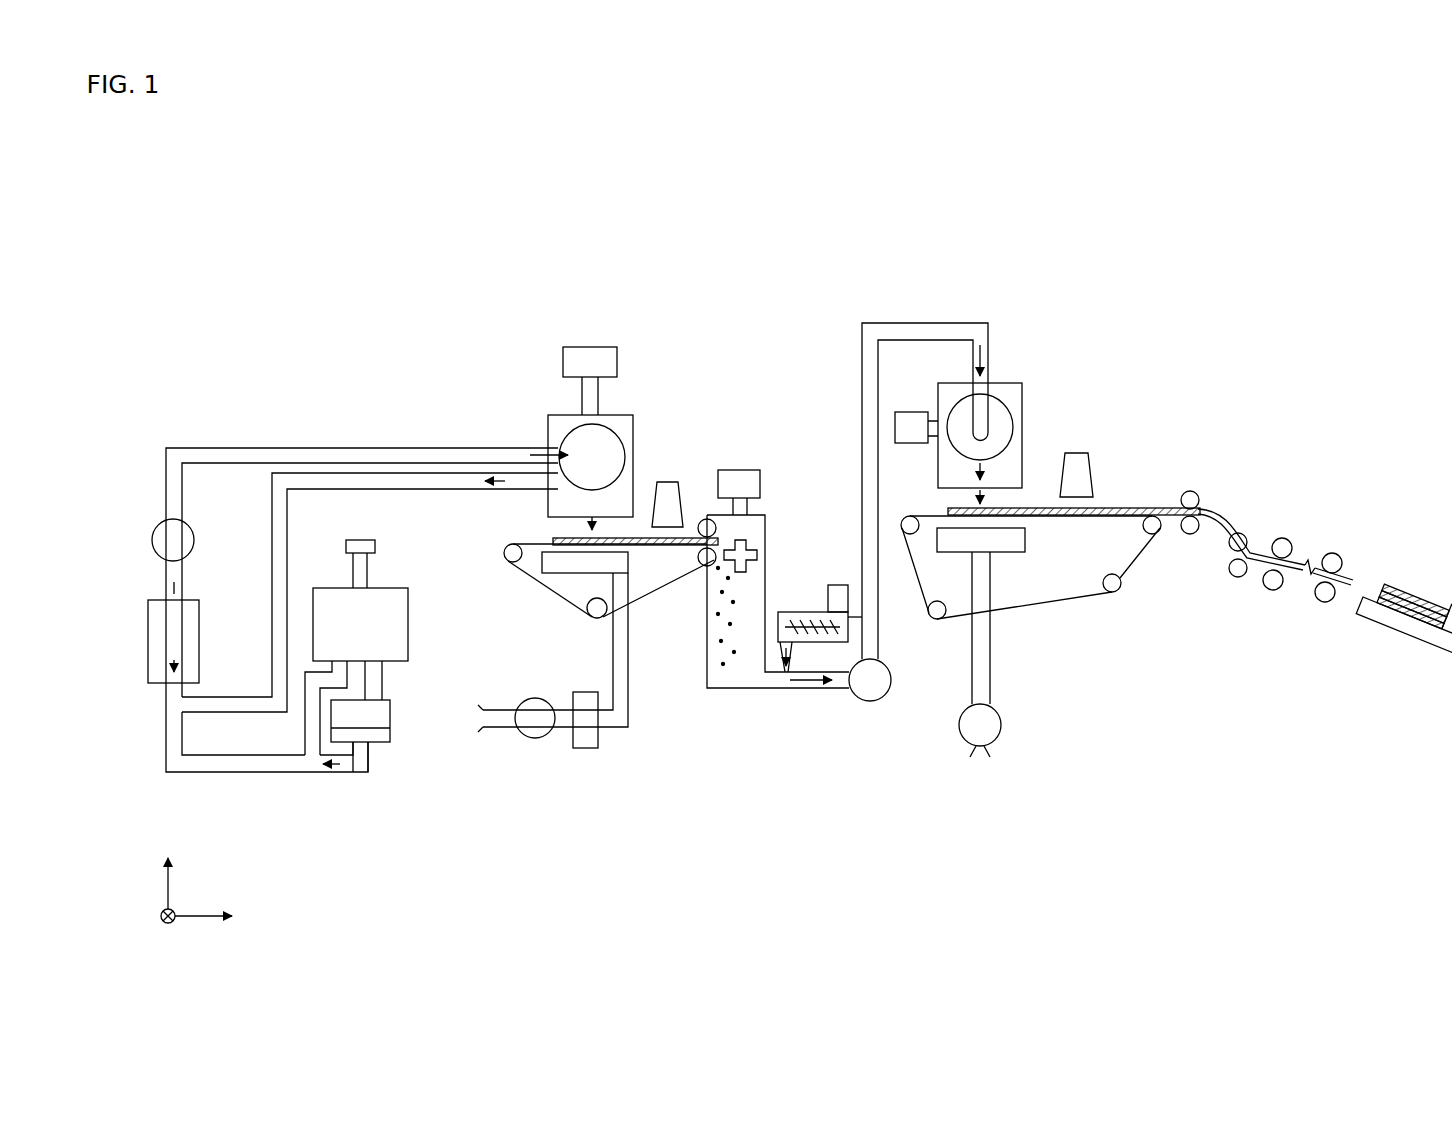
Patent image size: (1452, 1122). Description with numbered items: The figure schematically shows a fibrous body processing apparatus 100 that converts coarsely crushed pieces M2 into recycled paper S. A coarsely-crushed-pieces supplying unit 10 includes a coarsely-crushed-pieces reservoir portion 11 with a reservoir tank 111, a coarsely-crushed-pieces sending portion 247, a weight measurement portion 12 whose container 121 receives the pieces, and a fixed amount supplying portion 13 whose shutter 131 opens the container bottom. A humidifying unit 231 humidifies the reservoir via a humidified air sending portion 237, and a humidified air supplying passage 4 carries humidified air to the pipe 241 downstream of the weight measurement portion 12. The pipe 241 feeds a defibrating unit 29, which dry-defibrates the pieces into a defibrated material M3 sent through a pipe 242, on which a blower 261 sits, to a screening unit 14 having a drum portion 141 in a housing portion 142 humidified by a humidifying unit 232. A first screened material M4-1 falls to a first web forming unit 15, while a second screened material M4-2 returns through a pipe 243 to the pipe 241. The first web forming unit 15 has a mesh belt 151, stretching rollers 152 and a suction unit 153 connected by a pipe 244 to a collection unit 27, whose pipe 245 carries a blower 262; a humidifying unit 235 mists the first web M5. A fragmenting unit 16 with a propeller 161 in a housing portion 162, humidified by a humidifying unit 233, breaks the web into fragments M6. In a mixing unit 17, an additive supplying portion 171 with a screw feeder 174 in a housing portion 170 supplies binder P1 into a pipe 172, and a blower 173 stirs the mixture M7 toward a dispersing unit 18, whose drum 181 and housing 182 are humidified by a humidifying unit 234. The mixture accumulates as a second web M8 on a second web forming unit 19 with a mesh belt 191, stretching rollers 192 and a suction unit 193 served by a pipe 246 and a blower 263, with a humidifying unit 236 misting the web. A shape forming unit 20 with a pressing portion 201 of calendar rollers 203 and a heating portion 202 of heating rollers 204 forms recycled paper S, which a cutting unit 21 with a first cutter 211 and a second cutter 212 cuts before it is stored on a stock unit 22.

The fibrous body processing apparatus 100 is at (778, 168).
The humidified air supplying passage 4 is at (312, 721).
The coarsely-crushed-pieces supplying unit 10 is at (396, 575).
The coarsely-crushed-pieces reservoir portion 11 is at (420, 624).
The reservoir tank 111 is at (405, 628).
The weight measurement portion 12 is at (398, 736).
The container 121 is at (378, 718).
The fixed amount supplying portion 13 is at (300, 808).
The shutter 131 is at (340, 735).
The screening unit 14 is at (658, 416).
The drum portion 141 is at (620, 426).
The housing portion 142 is at (635, 418).
The first web forming unit 15 is at (642, 602).
The mesh belt 151 is at (657, 594).
The stretching rollers 152 is at (505, 552).
The suction unit 153 is at (630, 561).
The fragmenting unit 16 is at (768, 521).
The propeller 161 is at (760, 553).
The housing portion 162 is at (716, 690).
The mixing unit 17 is at (841, 705).
The housing portion 170 is at (875, 618).
The additive supplying portion 171 is at (835, 585).
The pipe 172 is at (891, 680).
The blower 173 is at (880, 700).
The screw feeder 174 is at (790, 612).
The dispersing unit 18 is at (1043, 384).
The drum 181 is at (1006, 409).
The housing 182 is at (1016, 383).
The second web forming unit 19 is at (1071, 606).
The mesh belt 191 is at (1026, 606).
The stretching rollers 192 is at (910, 516).
The suction unit 193 is at (1025, 541).
The shape forming unit 20 is at (1234, 480).
The pressing portion 201 is at (1228, 452).
The heating portion 202 is at (1255, 683).
The calendar rollers 203 is at (1182, 494).
The heating rollers 204 is at (1230, 548).
The cutting unit 21 is at (1277, 472).
The first cutter 211 is at (1276, 570).
The second cutter 212 is at (1328, 582).
The stock unit 22 is at (1420, 634).
The collection unit 27 is at (590, 749).
The defibrating unit 29 is at (147, 646).
The humidifying unit 231 is at (364, 540).
The humidifying unit 232 is at (592, 347).
The humidifying unit 233 is at (740, 470).
The humidifying unit 234 is at (912, 412).
The humidifying unit 235 is at (672, 482).
The humidifying unit 236 is at (1080, 453).
The humidified air sending portion 237 is at (355, 572).
The pipe 241 is at (305, 773).
The pipe 242 is at (258, 448).
The pipe 243 is at (424, 473).
The pipe 244 is at (630, 712).
The pipe 245 is at (568, 728).
The pipe 246 is at (990, 686).
The coarsely-crushed-pieces sending portion 247 is at (380, 682).
The blower 261 is at (160, 523).
The blower 262 is at (530, 738).
The blower 263 is at (1001, 725).
The coarsely crushed pieces M2 is at (170, 690).
The defibrated material M3 is at (543, 455).
The first screened material M4-1 is at (590, 510).
The second screened material M4-2 is at (503, 480).
The first web M5 is at (690, 527).
The fragments M6 is at (737, 606).
The mixture M7 is at (795, 691).
The second web M8 is at (1041, 508).
The binder P1 is at (792, 659).
The recycled paper S is at (1257, 556).